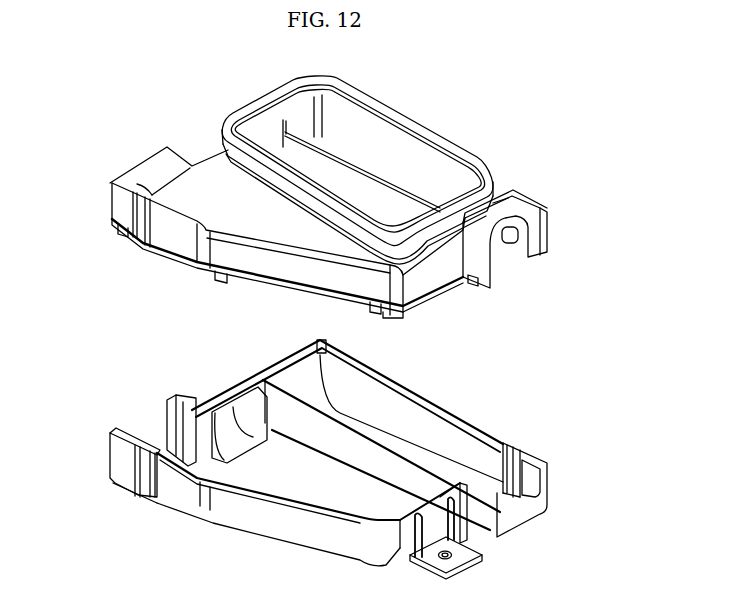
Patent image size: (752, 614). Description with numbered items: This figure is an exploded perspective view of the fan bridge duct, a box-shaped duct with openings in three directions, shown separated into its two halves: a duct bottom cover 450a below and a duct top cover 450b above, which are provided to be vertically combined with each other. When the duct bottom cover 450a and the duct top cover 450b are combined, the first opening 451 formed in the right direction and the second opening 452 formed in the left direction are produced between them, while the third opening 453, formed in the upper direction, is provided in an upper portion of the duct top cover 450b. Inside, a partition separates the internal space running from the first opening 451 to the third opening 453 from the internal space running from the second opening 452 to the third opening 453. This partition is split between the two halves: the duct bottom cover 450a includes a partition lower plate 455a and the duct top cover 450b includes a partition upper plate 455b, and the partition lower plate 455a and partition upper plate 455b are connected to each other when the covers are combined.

The duct bottom cover 450a is at (330, 459).
The duct top cover 450b is at (325, 185).
The first opening 451 is at (504, 262).
The second opening 452 is at (112, 192).
The third opening 453 is at (400, 164).
The partition lower plate 455a is at (393, 473).
The partition upper plate 455b is at (283, 130).